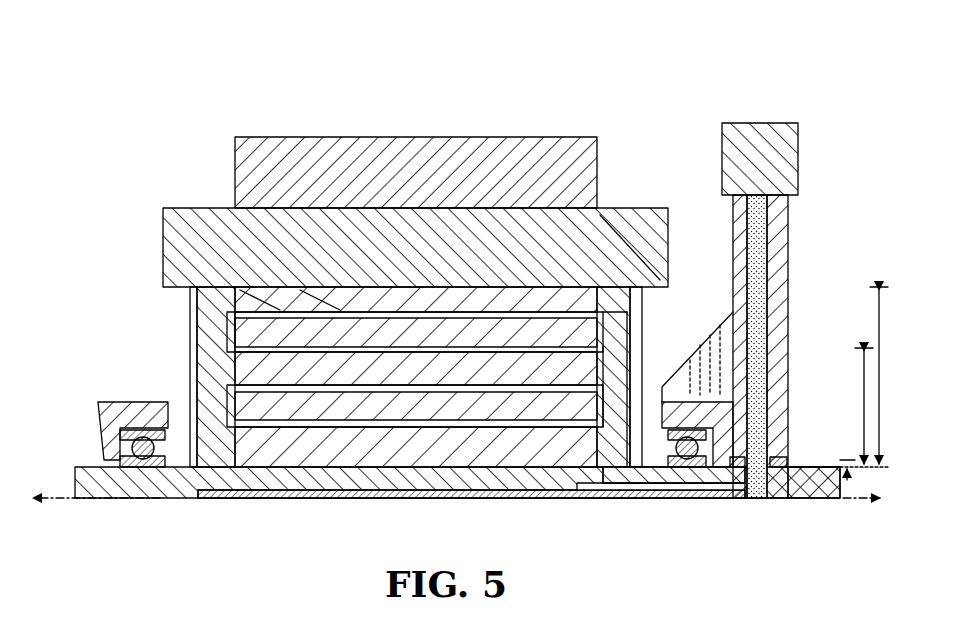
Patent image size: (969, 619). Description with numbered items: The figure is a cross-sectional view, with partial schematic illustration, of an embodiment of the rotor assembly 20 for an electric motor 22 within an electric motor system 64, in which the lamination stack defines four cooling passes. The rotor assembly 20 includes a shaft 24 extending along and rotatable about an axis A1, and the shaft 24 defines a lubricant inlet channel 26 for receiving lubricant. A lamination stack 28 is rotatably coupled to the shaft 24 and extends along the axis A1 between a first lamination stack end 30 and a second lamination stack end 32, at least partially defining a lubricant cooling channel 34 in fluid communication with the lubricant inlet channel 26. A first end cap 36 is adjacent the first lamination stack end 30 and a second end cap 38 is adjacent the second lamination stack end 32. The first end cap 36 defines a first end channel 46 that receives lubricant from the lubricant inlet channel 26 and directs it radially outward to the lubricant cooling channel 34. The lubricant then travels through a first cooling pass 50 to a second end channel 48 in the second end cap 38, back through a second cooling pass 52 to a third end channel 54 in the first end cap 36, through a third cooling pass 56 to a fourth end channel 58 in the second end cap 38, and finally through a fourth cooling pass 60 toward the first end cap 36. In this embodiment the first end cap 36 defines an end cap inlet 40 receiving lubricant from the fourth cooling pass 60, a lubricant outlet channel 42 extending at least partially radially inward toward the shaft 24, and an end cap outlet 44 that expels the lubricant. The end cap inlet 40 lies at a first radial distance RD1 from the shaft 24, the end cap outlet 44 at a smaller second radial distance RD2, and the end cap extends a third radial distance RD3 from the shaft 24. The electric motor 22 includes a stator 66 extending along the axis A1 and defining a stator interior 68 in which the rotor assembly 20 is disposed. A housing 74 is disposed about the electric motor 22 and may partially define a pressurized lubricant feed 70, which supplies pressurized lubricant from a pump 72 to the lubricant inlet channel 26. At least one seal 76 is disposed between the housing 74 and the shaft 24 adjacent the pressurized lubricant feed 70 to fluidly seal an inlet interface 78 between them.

The rotor assembly 20 is at (381, 411).
The electric motor 22 is at (560, 102).
The shaft 24 is at (146, 490).
The lubricant inlet channel 26 is at (645, 491).
The lamination stack 28 is at (400, 300).
The first lamination stack end 30 is at (583, 300).
The second lamination stack end 32 is at (262, 300).
The lubricant cooling channel 34 is at (422, 412).
The first end cap 36 is at (640, 300).
The second end cap 38 is at (215, 310).
The end cap inlet 40 is at (627, 322).
The lubricant outlet channel 42 is at (625, 382).
The end cap outlet 44 is at (640, 463).
The first end channel 46 is at (580, 470).
The second end channel 48 is at (233, 398).
The first cooling pass 50 is at (485, 425).
The second cooling pass 52 is at (447, 385).
The third end channel 54 is at (605, 342).
The third cooling pass 56 is at (410, 355).
The fourth end channel 58 is at (232, 343).
The fourth cooling pass 60 is at (323, 310).
The electric motor system 64 is at (130, 287).
The stator 66 is at (625, 236).
The stator interior 68 is at (188, 298).
The pressurized lubricant feed 70 is at (760, 236).
The pump 72 is at (800, 185).
The housing 74 is at (788, 346).
The seal 76 is at (738, 468).
The inlet interface 78 is at (798, 463).
The axis A1 is at (56, 495).
The first radial distance RD1 is at (862, 375).
The second radial distance RD2 is at (847, 457).
The third radial distance RD3 is at (876, 322).